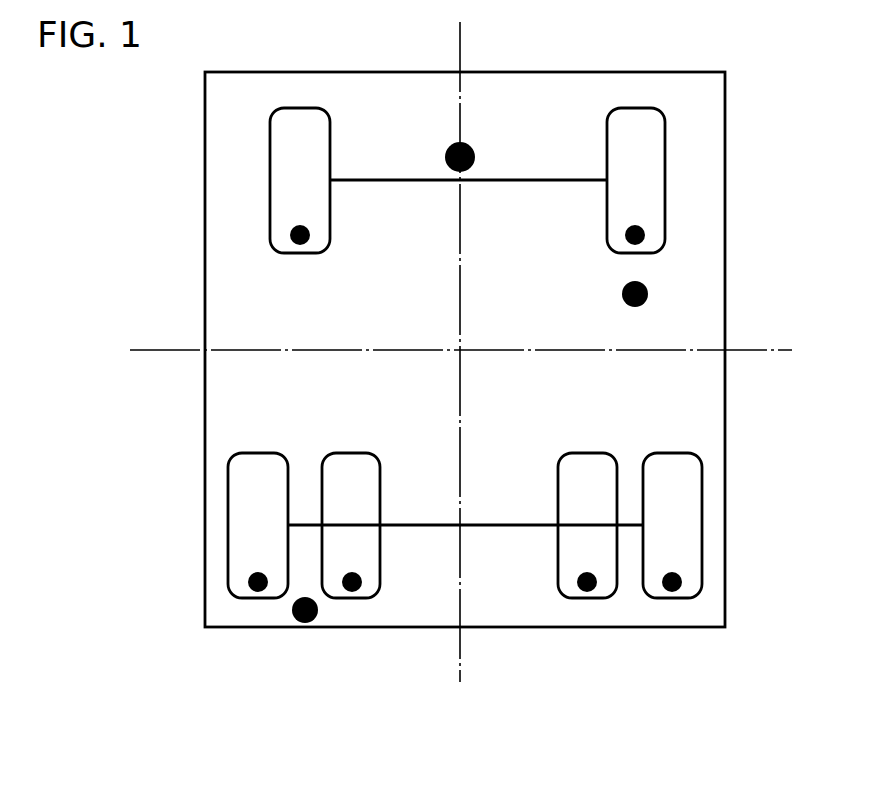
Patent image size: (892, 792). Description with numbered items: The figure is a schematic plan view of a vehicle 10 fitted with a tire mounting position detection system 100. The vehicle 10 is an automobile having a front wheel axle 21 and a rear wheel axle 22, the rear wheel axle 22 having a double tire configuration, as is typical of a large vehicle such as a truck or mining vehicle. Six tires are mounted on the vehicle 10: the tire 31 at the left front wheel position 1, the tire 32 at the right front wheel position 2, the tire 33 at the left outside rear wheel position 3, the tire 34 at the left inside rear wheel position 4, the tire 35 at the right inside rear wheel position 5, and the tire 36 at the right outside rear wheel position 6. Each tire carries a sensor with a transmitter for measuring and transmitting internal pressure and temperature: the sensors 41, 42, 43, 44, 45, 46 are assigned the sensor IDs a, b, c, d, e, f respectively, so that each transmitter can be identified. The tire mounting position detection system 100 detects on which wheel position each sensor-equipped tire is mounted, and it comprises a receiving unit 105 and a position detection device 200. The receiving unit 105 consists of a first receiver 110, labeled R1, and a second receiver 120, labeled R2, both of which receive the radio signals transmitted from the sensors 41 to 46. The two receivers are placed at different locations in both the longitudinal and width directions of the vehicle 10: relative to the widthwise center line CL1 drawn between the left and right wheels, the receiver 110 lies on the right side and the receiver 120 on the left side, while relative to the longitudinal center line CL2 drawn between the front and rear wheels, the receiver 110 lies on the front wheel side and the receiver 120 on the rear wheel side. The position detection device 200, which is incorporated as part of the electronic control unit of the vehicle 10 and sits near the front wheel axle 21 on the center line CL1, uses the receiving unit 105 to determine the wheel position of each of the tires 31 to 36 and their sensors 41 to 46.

The left front wheel position 1 is at (300, 91).
The right front wheel position 2 is at (637, 91).
The left outside rear wheel position 3 is at (252, 438).
The left inside rear wheel position 4 is at (340, 438).
The right inside rear wheel position 5 is at (582, 438).
The right outside rear wheel position 6 is at (668, 438).
The vehicle 10 is at (727, 121).
The front wheel axle 21 is at (367, 178).
The rear wheel axle 22 is at (415, 522).
The tire 31 is at (269, 190).
The tire 32 is at (666, 183).
The tire 33 is at (246, 448).
The tire 34 is at (328, 448).
The tire 35 is at (604, 448).
The tire 36 is at (686, 448).
The sensor 41 is at (302, 245).
The sensor 42 is at (646, 235).
The sensor 43 is at (262, 590).
The sensor 44 is at (356, 590).
The sensor 45 is at (592, 590).
The sensor 46 is at (677, 590).
The tire mounting position detection system 100 is at (520, 131).
The receiving unit 105 is at (450, 705).
The receiver 110 is at (634, 306).
The receiver 120 is at (303, 623).
The position detection device 200 is at (476, 157).
The widthwise center line CL1 is at (462, 47).
The longitudinal center line CL2 is at (770, 348).
The receiver label R1 is at (667, 294).
The receiver label R2 is at (306, 590).
The sensor ID a is at (280, 270).
The sensor ID b is at (627, 270).
The sensor ID c is at (255, 613).
The sensor ID d is at (342, 613).
The sensor ID e is at (580, 613).
The sensor ID f is at (672, 613).